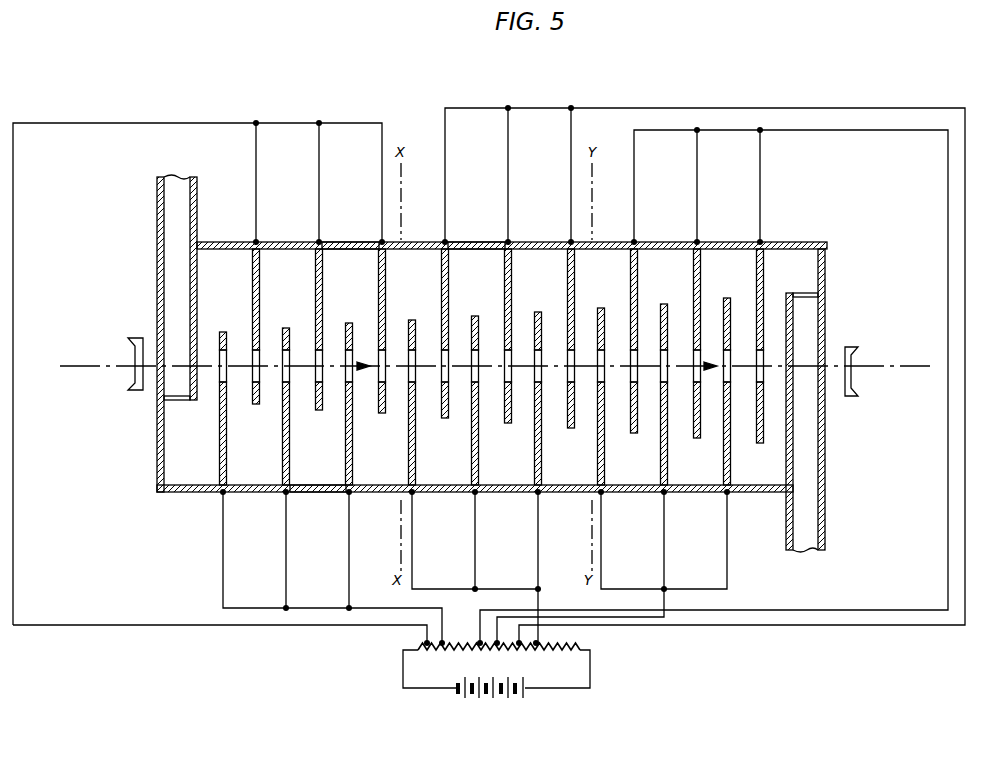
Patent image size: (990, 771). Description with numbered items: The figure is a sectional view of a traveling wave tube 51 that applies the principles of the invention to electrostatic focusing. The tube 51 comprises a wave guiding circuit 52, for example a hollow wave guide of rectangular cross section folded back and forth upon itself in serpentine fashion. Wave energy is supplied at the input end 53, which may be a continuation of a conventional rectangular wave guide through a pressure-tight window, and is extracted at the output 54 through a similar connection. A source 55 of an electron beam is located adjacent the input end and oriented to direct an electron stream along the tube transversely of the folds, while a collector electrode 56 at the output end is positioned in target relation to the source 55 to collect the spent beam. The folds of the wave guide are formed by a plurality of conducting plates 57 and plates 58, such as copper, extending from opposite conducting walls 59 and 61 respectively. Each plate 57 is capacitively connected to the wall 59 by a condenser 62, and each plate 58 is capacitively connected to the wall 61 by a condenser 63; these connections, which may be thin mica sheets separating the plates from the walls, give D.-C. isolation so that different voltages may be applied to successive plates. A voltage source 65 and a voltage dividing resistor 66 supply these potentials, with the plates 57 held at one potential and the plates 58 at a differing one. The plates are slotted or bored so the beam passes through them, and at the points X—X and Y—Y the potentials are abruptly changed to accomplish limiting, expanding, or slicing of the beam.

The tube 51 is at (101, 545).
The wave guiding circuit 52 is at (221, 242).
The input end 53 is at (157, 207).
The output 54 is at (826, 513).
The source of an electron beam 55 is at (139, 338).
The collector electrode 56 is at (856, 347).
The plates 57 is at (449, 282).
The plates 58 is at (542, 452).
The wall 59 is at (470, 242).
The wall 61 is at (437, 492).
The condenser 62 is at (333, 242).
The condenser 63 is at (351, 492).
The voltage source 65 is at (500, 698).
The voltage dividing resistor 66 is at (555, 647).